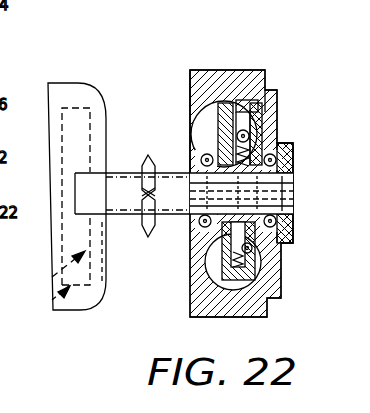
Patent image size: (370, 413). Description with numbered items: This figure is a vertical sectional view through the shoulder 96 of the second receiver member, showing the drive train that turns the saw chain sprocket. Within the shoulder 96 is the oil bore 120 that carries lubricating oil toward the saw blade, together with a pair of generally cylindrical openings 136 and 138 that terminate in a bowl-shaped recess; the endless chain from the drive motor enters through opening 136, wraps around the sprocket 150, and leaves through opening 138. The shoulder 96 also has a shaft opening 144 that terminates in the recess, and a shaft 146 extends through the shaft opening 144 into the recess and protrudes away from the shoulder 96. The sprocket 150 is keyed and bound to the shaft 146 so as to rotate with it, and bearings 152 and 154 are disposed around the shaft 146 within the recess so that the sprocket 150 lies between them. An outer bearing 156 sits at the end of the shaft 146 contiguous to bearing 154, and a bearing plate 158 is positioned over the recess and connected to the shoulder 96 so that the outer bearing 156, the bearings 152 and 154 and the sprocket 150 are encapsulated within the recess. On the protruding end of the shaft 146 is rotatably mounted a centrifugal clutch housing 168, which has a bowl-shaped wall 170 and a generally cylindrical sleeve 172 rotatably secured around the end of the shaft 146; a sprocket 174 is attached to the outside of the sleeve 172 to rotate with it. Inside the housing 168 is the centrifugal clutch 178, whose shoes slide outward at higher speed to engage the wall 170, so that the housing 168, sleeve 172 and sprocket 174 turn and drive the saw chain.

The shoulder 96 is at (222, 102).
The oil bore 120 is at (224, 76).
The cylindrical opening 136 is at (194, 80).
The cylindrical opening 138 is at (196, 268).
The shaft opening 144 is at (165, 222).
The shaft 146 is at (289, 185).
The sprocket 150 is at (262, 102).
The bearing 152 is at (190, 138).
The bearing 154 is at (268, 134).
The outer bearing 156 is at (295, 247).
The bearing plate 158 is at (297, 200).
The centrifugal clutch housing 168 is at (113, 146).
The bowl-shaped wall 170 is at (52, 297).
The cylindrical sleeve 172 is at (116, 190).
The sprocket 174 is at (143, 225).
The centrifugal clutch 178 is at (52, 278).